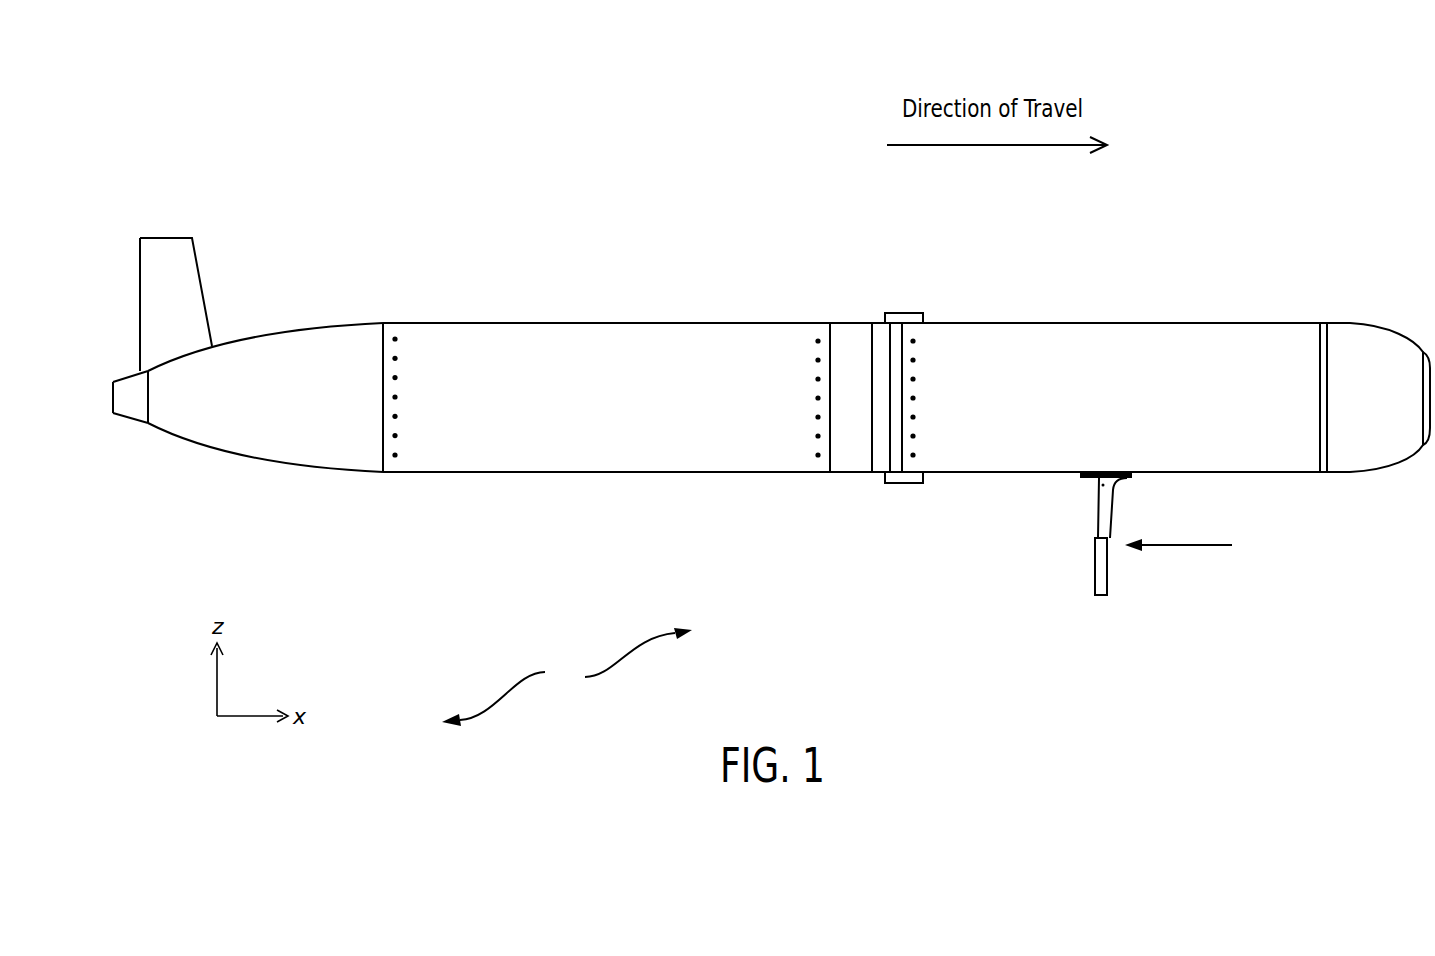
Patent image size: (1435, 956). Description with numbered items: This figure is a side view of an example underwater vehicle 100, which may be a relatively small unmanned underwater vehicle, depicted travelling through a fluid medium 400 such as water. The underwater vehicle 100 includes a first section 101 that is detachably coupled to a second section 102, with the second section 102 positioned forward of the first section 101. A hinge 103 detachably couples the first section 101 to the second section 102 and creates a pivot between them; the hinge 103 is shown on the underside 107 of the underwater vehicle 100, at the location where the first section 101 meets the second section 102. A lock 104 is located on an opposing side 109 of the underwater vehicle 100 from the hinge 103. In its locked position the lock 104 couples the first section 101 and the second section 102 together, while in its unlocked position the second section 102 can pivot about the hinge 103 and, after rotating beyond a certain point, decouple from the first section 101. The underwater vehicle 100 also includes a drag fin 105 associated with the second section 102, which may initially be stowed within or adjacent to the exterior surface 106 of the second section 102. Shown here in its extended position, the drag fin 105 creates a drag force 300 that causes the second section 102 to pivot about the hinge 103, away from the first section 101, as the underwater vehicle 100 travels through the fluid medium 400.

The underwater vehicle 100 is at (690, 218).
The first section 101 is at (575, 322).
The second section 102 is at (1135, 323).
The hinge 103 is at (904, 483).
The lock 104 is at (903, 312).
The drag fin 105 is at (1095, 560).
The exterior surface 106 is at (1248, 472).
The underside 107 is at (794, 472).
The opposing side 109 is at (845, 322).
The drag force 300 is at (1178, 563).
The fluid medium 400 is at (567, 677).